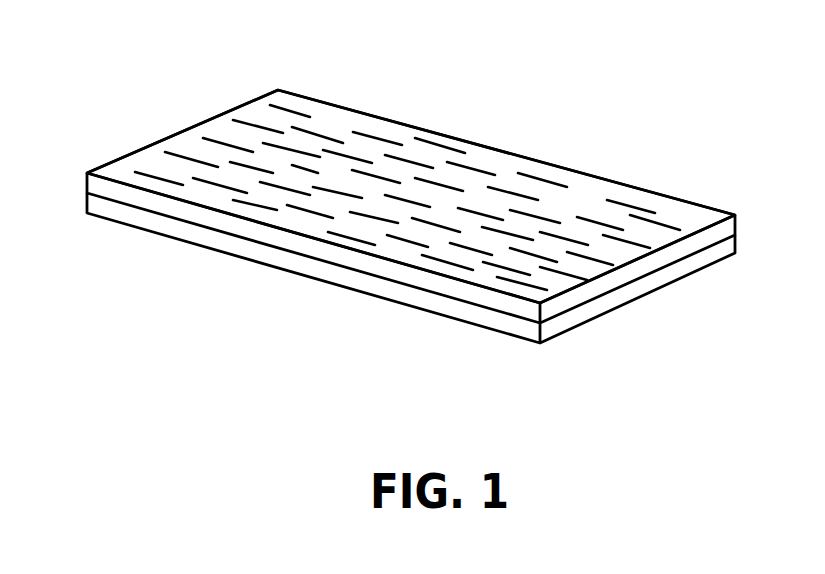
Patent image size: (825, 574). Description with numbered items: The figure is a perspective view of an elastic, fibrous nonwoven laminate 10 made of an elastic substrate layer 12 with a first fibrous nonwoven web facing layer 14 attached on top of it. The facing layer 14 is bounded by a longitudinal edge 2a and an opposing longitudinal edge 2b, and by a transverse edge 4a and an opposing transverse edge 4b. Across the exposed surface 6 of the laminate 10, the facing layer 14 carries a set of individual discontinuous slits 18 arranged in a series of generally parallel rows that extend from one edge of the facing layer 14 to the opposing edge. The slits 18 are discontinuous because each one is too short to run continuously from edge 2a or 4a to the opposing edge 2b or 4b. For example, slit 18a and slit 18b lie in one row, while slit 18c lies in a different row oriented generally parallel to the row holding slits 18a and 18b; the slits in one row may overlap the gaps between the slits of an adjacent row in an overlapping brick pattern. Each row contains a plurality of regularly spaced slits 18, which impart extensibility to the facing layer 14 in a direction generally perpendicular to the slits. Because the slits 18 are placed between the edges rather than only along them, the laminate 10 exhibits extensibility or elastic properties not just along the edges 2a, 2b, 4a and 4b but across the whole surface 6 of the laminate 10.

The elastic fibrous nonwoven laminate 10 is at (380, 90).
The exposed surface 6 is at (254, 112).
The longitudinal edge 2a is at (203, 123).
The opposing longitudinal edge 2b is at (690, 238).
The transverse edge 4a is at (456, 278).
The opposing transverse edge 4b is at (431, 130).
The first fibrous nonwoven web facing layer 14 is at (683, 218).
The elastic substrate layer 12 is at (329, 283).
The slits 18 is at (544, 177).
The slit 18a is at (155, 175).
The slit 18b is at (250, 203).
The slit 18c is at (197, 180).